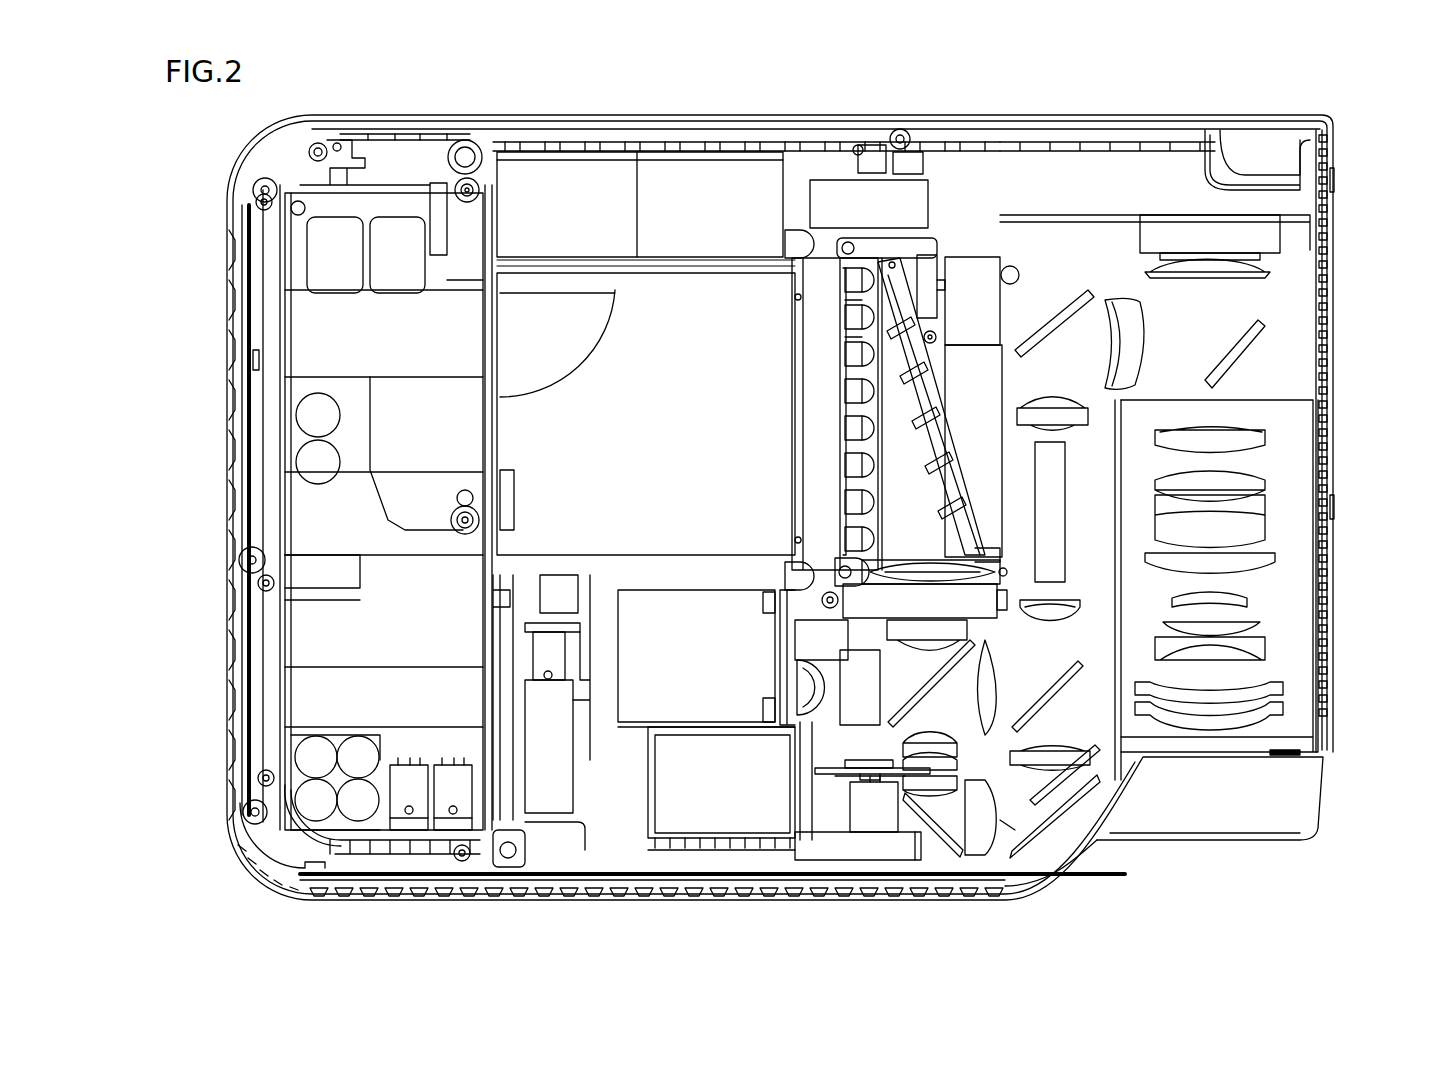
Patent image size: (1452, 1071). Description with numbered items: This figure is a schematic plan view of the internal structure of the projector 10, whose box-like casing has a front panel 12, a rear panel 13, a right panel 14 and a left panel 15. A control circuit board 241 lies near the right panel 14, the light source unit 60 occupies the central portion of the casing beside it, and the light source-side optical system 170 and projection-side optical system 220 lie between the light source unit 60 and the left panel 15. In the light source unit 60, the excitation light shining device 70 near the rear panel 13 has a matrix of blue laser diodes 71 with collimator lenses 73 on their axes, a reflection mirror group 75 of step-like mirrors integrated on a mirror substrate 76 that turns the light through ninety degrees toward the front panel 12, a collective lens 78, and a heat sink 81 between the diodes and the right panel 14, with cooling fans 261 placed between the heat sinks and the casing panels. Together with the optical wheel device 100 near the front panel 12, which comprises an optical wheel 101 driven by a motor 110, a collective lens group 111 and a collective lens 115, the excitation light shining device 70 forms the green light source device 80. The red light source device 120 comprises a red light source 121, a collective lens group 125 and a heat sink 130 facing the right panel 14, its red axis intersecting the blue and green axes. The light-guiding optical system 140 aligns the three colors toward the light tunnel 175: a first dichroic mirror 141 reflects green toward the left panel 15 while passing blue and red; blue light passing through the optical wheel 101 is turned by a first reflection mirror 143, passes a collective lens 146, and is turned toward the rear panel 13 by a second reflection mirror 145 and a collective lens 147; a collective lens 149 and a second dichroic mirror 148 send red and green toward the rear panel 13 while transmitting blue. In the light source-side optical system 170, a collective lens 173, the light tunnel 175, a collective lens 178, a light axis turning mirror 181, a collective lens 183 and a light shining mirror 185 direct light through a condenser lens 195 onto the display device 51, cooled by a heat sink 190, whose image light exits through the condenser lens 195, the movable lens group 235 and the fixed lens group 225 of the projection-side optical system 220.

The projector 10 is at (1362, 108).
The front panel 12 is at (400, 882).
The rear panel 13 is at (590, 133).
The right panel 14 is at (242, 360).
The left panel 15 is at (1334, 688).
The display device 51 is at (1252, 252).
The light source unit 60 is at (760, 476).
The excitation light shining device 70 is at (826, 255).
The blue laser diodes 71 is at (848, 393).
The collimator lenses 73 is at (860, 355).
The reflection mirror group 75 is at (925, 432).
The mirror substrate 76 is at (905, 300).
The collective lens 78 is at (915, 570).
The green light source device 80 is at (849, 517).
The heat sink 81 is at (683, 375).
The optical wheel device 100 is at (872, 848).
The optical wheel 101 is at (838, 775).
The motor 110 is at (873, 815).
The collective lens group 111 is at (1000, 850).
The collective lens 115 is at (935, 820).
The red light source device 120 is at (783, 717).
The red light source 121 is at (787, 688).
The collective lens group 125 is at (810, 660).
The heat sink 130 is at (657, 668).
The light-guiding optical system 140 is at (1103, 757).
The first dichroic mirror 141 is at (928, 698).
The first reflection mirror 143 is at (930, 778).
The second reflection mirror 145 is at (1075, 785).
The collective lens 146 is at (990, 842).
The collective lens 147 is at (1065, 754).
The second dichroic mirror 148 is at (1050, 690).
The collective lens 149 is at (1058, 822).
The light source-side optical system 170 is at (1078, 265).
The collective lens 173 is at (1052, 612).
The light tunnel 175 is at (1050, 560).
The collective lens 178 is at (1052, 400).
The light axis turning mirror 181 is at (1050, 315).
The collective lens 183 is at (1135, 320).
The light shining mirror 185 is at (1245, 355).
The heat sink 190 is at (1170, 165).
The condenser lens 195 is at (1260, 267).
The projection-side optical system 220 is at (1302, 532).
The fixed lens group 225 is at (1262, 738).
The movable lens group 235 is at (1303, 452).
The control circuit board 241 is at (360, 605).
The cooling fan 261 is at (520, 197).